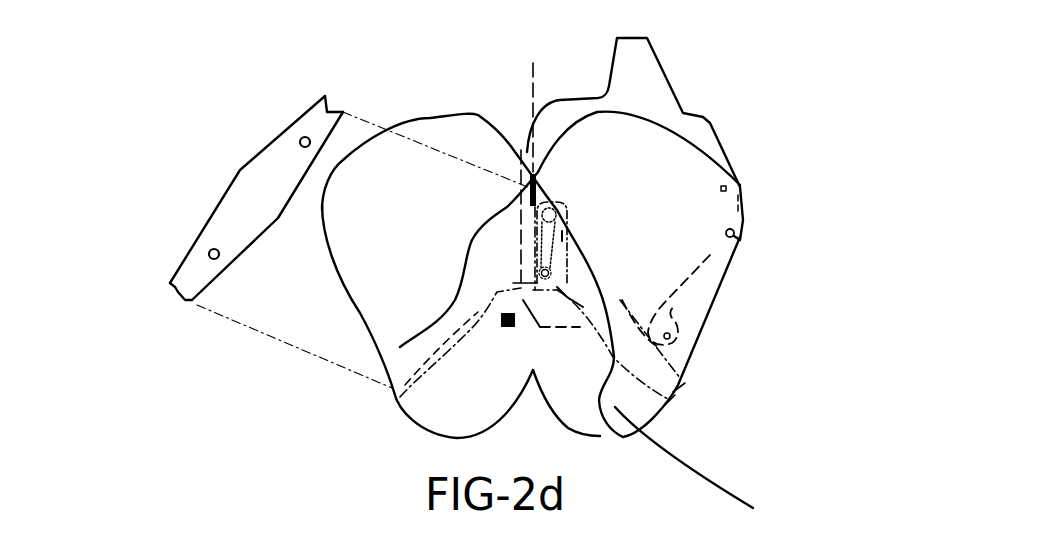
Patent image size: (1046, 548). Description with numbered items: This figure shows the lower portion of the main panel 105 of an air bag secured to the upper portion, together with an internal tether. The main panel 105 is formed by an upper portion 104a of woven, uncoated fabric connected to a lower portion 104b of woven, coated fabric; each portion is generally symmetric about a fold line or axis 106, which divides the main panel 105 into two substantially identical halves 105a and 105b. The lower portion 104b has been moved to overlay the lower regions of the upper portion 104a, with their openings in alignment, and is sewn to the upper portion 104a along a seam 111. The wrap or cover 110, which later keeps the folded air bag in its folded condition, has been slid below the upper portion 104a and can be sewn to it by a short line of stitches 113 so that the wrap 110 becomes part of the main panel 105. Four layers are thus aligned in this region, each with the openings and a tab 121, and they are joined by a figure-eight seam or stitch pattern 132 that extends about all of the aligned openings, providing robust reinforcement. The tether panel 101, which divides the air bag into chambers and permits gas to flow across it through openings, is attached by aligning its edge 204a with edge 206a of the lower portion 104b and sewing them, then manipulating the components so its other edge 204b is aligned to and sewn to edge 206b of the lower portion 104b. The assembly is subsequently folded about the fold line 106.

The tether panel 101 is at (271, 142).
The edge or side of the tether panel 204a is at (252, 245).
The edge or side of the tether panel 204b is at (212, 215).
The upper portion of the main panel 104a is at (398, 173).
The lower portion of the main panel 104b is at (590, 436).
The main panel 105 is at (559, 340).
The panel part or half 105a is at (693, 302).
The panel part or half 105b is at (403, 283).
The fold line or axis 106 is at (533, 90).
The wrap or cover 110 is at (655, 80).
The seam 111 is at (706, 464).
The short line of stitches 113 is at (565, 237).
The tab 121 is at (555, 226).
The figure-8 seam or stitch pattern 132 is at (530, 250).
The edge or side of the lower portion 206a is at (400, 347).
The edge or side of the lower portion 206b is at (585, 236).